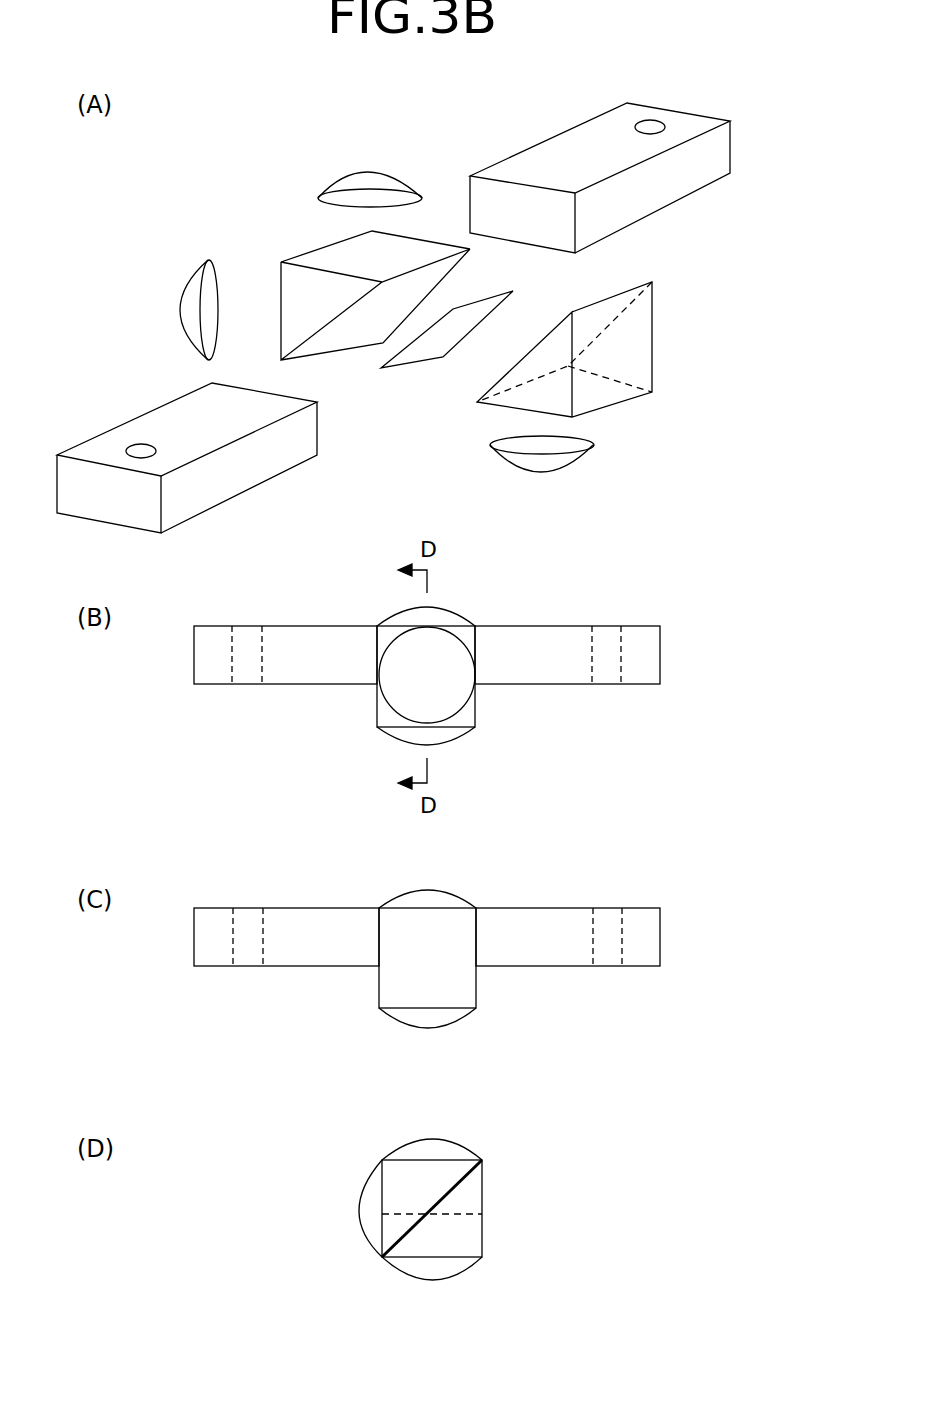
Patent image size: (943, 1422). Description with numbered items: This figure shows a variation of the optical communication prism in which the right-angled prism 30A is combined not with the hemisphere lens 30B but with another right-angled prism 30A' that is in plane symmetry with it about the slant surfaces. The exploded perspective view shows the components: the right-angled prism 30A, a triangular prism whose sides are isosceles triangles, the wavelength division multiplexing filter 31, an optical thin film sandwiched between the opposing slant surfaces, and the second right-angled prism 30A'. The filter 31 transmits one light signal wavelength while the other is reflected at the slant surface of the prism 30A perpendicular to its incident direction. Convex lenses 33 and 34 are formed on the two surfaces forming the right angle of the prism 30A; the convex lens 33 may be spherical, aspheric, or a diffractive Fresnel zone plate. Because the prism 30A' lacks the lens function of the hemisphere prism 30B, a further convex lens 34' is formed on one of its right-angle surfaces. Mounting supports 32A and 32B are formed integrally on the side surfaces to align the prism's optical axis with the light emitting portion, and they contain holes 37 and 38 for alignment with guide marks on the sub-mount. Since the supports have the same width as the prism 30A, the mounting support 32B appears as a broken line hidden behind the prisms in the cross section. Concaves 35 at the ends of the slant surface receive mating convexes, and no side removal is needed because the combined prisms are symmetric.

The right-angled prism 30A is at (392, 738).
The right-angled prism 30A' is at (558, 780).
The hemisphere lens 30B is at (452, 960).
The wavelength division multiplexing filter 31 is at (420, 355).
The mounting support 32A is at (165, 420).
The mounting support 32B is at (582, 140).
The convex lens 33 is at (188, 307).
The convex lens 34 is at (402, 631).
The convex lens 34' is at (542, 492).
The concave 35 is at (445, 737).
The hole 37 is at (140, 447).
The hole 38 is at (652, 127).